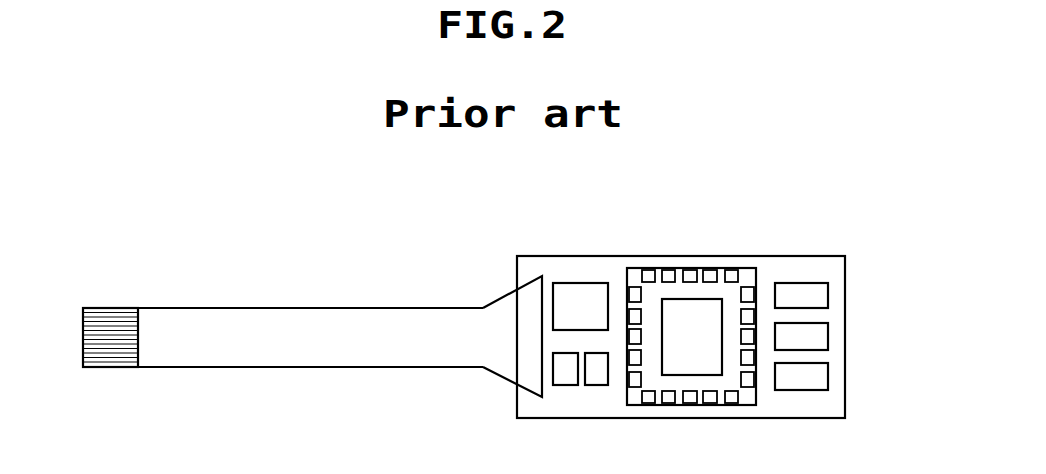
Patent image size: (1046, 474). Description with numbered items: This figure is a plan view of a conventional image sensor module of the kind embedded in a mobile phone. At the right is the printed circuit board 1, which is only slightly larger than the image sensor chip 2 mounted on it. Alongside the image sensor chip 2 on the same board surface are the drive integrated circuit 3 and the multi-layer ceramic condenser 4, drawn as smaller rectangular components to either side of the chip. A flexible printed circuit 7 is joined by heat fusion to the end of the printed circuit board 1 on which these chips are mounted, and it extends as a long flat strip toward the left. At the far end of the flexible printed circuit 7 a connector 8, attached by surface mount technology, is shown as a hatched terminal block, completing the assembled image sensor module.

The printed circuit board 1 is at (845, 335).
The image sensor chip 2 is at (683, 292).
The drive integrated circuit 3 is at (575, 303).
The multi-layer ceramic condenser 4 is at (800, 300).
The flexible printed circuit 7 is at (233, 325).
The connector 8 is at (107, 325).